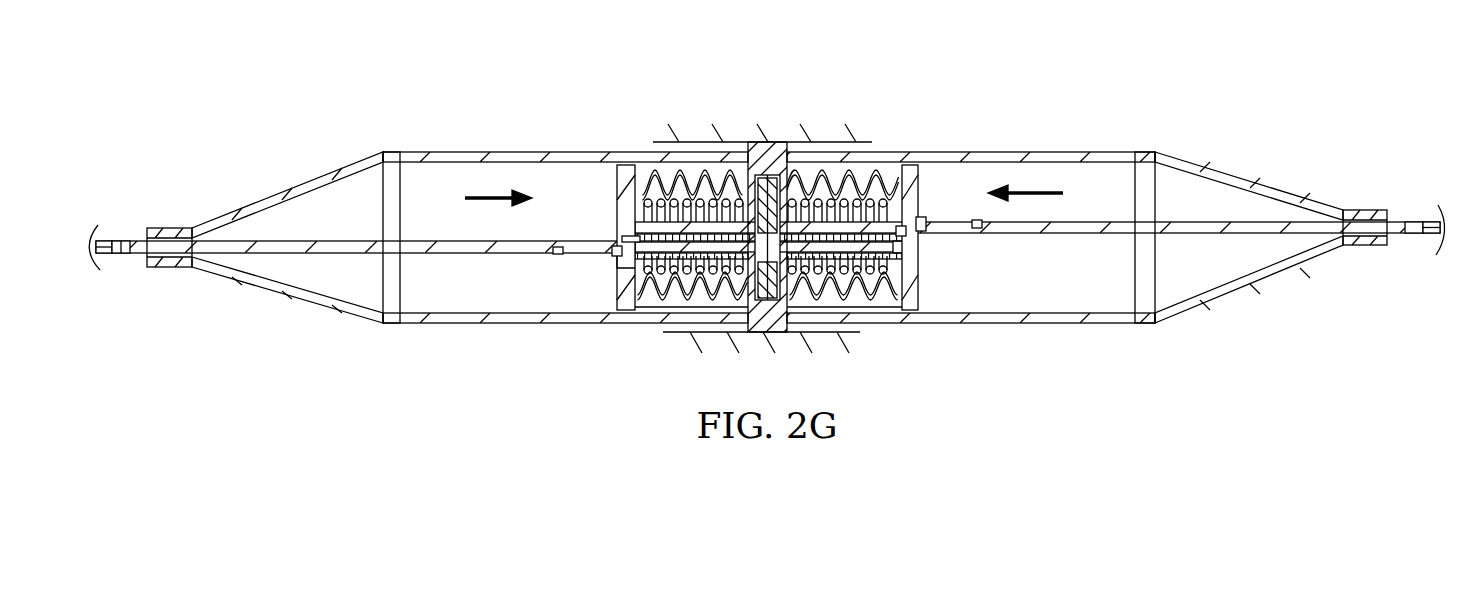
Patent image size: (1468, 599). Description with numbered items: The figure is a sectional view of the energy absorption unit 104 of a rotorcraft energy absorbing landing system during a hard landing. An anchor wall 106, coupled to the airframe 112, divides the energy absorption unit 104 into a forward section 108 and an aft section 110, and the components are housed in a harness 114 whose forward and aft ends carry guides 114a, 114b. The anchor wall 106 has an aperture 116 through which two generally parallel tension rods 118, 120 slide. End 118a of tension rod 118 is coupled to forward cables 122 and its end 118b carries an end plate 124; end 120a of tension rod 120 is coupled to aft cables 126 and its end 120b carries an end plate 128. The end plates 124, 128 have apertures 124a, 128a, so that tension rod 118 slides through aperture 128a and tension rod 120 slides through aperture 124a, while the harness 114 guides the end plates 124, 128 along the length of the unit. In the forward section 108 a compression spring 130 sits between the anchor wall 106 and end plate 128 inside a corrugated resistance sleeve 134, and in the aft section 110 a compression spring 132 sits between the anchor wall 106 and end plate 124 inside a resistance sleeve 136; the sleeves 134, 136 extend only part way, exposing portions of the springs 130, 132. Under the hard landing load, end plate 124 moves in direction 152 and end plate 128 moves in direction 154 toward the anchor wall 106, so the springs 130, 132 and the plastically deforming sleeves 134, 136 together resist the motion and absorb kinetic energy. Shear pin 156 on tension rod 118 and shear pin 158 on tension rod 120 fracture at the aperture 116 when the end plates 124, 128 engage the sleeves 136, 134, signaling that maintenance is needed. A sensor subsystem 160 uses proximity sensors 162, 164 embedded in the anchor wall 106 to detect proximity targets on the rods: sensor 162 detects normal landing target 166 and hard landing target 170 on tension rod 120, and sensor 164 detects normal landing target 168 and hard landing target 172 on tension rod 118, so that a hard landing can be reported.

The energy absorption unit 104 is at (978, 75).
The anchor wall 106 is at (778, 158).
The forward section 108 is at (433, 150).
The aft section 110 is at (972, 150).
The airframe 112 is at (668, 142).
The harness 114 is at (292, 185).
The guide 114a is at (172, 228).
The guide 114b is at (1353, 208).
The aperture 116 is at (723, 200).
The tension rod 118 is at (438, 240).
The end 118a is at (123, 242).
The end 118b is at (873, 260).
The tension rod 120 is at (1073, 233).
The end 120a is at (1412, 220).
The end 120b is at (648, 233).
The forward cables 122 is at (100, 256).
The end plate 124 is at (905, 255).
The aperture 124a is at (925, 252).
The aft cables 126 is at (1438, 235).
The end plate 128 is at (620, 305).
The aperture 128a is at (617, 262).
The compression spring 130 is at (664, 295).
The compression spring 132 is at (906, 180).
The resistance sleeve 134 is at (706, 307).
The resistance sleeve 136 is at (823, 290).
The direction 152 is at (1037, 190).
The direction 154 is at (492, 190).
The shear pin 156 is at (612, 248).
The shear pin 158 is at (922, 234).
The sensor subsystem 160 is at (773, 140).
The proximity sensor 162 is at (808, 180).
The proximity sensor 164 is at (780, 300).
The normal landing proximity target 166 is at (980, 228).
The normal landing proximity target 168 is at (556, 255).
The hard landing proximity target 170 is at (921, 218).
The hard landing proximity target 172 is at (625, 236).